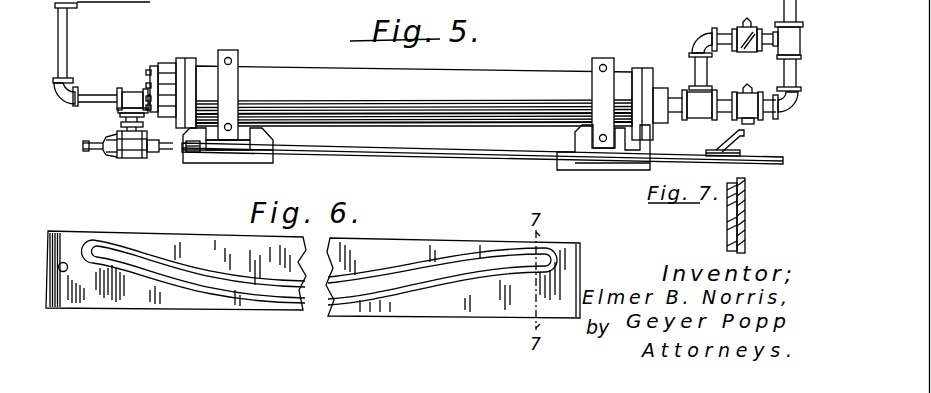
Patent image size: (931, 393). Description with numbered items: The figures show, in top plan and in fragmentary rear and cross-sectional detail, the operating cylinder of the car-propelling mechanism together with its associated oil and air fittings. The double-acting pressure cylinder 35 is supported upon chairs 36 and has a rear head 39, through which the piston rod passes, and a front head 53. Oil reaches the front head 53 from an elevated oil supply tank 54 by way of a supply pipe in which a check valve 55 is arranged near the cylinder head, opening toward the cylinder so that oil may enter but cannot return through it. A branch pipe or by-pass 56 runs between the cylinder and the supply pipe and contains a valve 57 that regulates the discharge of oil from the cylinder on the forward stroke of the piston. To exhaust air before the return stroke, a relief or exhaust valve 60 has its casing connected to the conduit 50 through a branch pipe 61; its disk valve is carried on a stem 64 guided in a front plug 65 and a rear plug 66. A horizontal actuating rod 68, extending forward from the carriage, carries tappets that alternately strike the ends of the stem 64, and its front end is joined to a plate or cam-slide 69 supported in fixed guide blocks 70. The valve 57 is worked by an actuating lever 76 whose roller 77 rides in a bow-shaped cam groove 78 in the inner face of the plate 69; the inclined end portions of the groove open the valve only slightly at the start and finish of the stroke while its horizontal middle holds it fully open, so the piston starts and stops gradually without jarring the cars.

In FIG. 5, the double-acting pressure cylinder 35 is at (414, 96).
In FIG. 5, the chairs 36 is at (240, 62).
In FIG. 5, the rear head 39 is at (186, 60).
In FIG. 5, the conduit 50 is at (94, 94).
In FIG. 5, the front head 53 is at (646, 70).
In FIG. 5, the elevated oil supply tank 54 is at (781, 27).
In FIG. 5, the check valve 55 is at (742, 25).
In FIG. 5, the branch pipe or by-pass 56 is at (785, 72).
In FIG. 5, the valve 57 is at (750, 110).
In FIG. 5, the relief or exhaust valve 60 is at (133, 152).
In FIG. 5, the branch pipe 61 is at (118, 120).
In FIG. 5, the stem 64 is at (86, 150).
In FIG. 5, the front plug 65 is at (156, 153).
In FIG. 5, the rear plug 66 is at (107, 152).
In FIG. 5, the actuating rod 68 is at (193, 153).
In FIG. 5, the plate or cam-slide 69 is at (432, 153).
In FIG. 6, the plate or cam-slide 69 is at (313, 274).
In FIG. 7, the plate or cam-slide 69 is at (747, 238).
In FIG. 5, the guide blocks 70 is at (247, 152).
In FIG. 5, the actuating lever 76 is at (733, 146).
In FIG. 5, the roller 77 is at (712, 149).
In FIG. 6, the bow-shaped cam groove 78 is at (433, 280).
In FIG. 7, the bow-shaped cam groove 78 is at (728, 203).